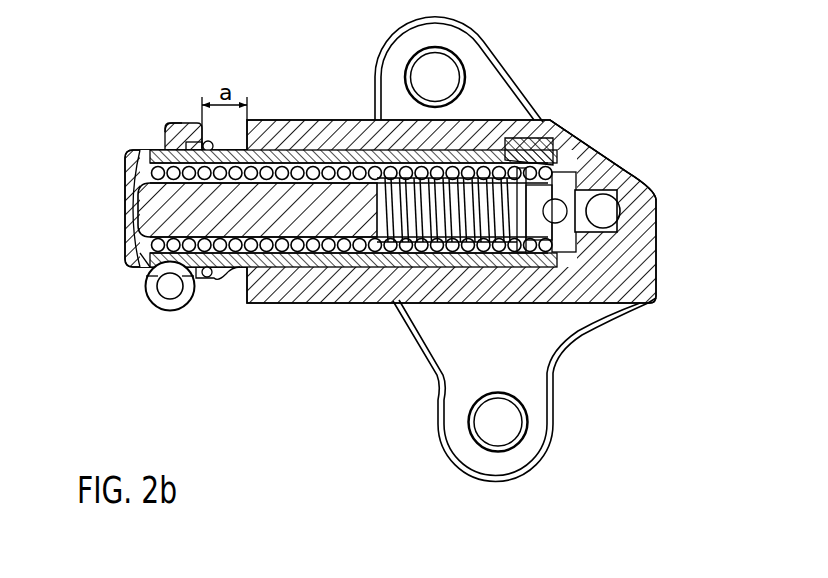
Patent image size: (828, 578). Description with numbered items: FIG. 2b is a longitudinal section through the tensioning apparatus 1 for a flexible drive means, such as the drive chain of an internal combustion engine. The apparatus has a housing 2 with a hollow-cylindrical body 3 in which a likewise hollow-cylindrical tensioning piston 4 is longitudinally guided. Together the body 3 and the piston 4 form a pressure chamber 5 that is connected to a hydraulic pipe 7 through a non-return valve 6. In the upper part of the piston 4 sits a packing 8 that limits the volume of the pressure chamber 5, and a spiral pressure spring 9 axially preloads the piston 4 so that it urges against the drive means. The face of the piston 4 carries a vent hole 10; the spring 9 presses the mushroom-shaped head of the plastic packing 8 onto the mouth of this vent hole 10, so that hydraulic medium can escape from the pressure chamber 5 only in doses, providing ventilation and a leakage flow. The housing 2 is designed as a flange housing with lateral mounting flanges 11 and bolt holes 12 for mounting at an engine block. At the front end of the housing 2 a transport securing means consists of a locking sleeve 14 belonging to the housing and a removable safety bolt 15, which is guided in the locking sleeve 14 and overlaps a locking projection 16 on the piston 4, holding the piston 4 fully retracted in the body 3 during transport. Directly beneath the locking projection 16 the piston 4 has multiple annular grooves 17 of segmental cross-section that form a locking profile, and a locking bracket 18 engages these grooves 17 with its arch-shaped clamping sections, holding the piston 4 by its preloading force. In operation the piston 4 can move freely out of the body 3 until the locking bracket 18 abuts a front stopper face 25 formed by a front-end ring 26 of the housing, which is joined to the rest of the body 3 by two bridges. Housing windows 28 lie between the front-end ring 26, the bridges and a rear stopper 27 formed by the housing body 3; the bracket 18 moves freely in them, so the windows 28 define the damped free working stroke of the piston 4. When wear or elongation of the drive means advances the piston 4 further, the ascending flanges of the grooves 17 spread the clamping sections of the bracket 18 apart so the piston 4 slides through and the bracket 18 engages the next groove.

The tensioning apparatus 1 is at (650, 141).
The housing 2 is at (654, 278).
The hollow-cylindrical body 3 is at (480, 302).
The tensioning piston 4 is at (130, 157).
The pressure chamber 5 is at (575, 150).
The non-return valve 6 is at (652, 178).
The hydraulic pipe 7 is at (612, 212).
The packing 8 is at (283, 203).
The spiral pressure spring 9 is at (575, 262).
The vent hole 10 is at (128, 208).
The mounting flange 11 is at (493, 97).
The bolt hole 12 is at (452, 67).
The locking sleeve 14 is at (172, 311).
The safety bolt 15 is at (151, 301).
The locking projection 16 is at (150, 268).
The annular grooves 17 is at (330, 270).
The locking bracket 18 is at (170, 133).
The front stopper face 25 is at (207, 140).
The front-end ring 26 is at (172, 123).
The rear stopper 27 is at (238, 275).
The housing windows 28 is at (219, 298).